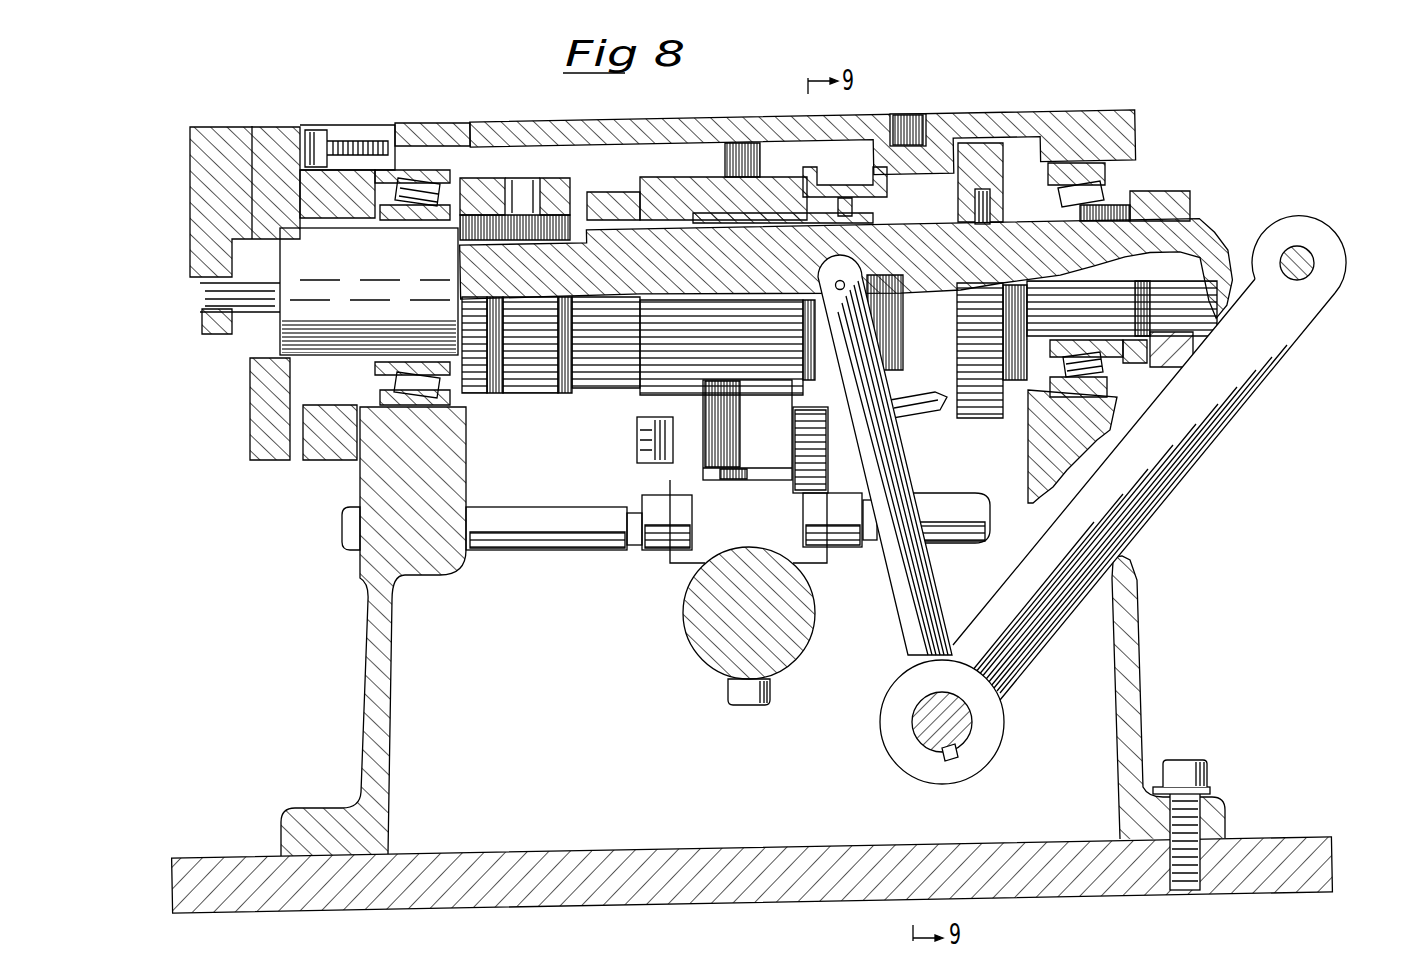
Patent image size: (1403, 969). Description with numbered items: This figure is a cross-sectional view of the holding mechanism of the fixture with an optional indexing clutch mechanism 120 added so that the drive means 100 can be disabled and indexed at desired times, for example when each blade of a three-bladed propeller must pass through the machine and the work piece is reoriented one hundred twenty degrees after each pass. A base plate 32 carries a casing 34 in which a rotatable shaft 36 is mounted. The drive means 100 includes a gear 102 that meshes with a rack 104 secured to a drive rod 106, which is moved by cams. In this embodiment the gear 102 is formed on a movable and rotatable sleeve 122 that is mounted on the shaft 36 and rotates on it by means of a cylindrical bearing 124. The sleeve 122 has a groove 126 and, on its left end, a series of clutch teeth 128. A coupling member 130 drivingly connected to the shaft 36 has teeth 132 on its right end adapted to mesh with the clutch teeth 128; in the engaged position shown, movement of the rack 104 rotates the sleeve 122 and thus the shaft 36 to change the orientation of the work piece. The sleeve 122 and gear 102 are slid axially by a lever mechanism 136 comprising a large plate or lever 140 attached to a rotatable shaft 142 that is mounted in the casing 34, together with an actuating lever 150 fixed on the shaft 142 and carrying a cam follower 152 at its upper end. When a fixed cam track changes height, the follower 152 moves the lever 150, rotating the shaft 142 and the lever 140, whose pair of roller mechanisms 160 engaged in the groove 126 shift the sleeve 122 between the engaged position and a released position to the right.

The base plate 32 is at (1279, 838).
The casing 34 is at (1134, 650).
The rotatable shaft 36 is at (370, 268).
The drive means 100 is at (647, 560).
The gear 102 is at (643, 400).
The rack 104 is at (767, 440).
The drive rod 106 is at (703, 642).
The clutch mechanism 120 is at (907, 188).
The sleeve 122 is at (662, 180).
The cylindrical bearing 124 is at (715, 176).
The groove 126 is at (860, 186).
The clutch teeth 128 is at (578, 212).
The coupling member 130 is at (493, 190).
The teeth 132 is at (600, 195).
The lever mechanism 136 is at (890, 388).
The lever 140 is at (913, 632).
The rotatable shaft 142 is at (922, 728).
The actuating lever 150 is at (1265, 353).
The cam follower 152 is at (1322, 220).
The roller mechanisms 160 is at (968, 350).